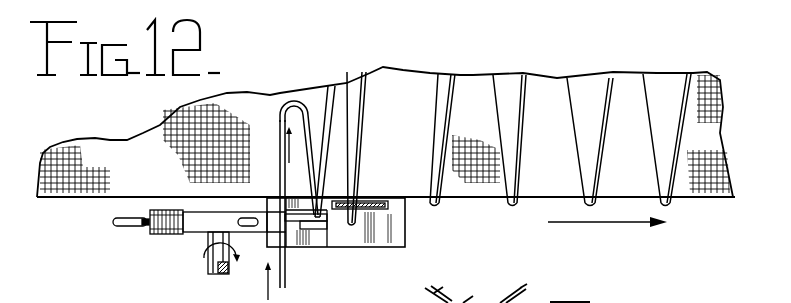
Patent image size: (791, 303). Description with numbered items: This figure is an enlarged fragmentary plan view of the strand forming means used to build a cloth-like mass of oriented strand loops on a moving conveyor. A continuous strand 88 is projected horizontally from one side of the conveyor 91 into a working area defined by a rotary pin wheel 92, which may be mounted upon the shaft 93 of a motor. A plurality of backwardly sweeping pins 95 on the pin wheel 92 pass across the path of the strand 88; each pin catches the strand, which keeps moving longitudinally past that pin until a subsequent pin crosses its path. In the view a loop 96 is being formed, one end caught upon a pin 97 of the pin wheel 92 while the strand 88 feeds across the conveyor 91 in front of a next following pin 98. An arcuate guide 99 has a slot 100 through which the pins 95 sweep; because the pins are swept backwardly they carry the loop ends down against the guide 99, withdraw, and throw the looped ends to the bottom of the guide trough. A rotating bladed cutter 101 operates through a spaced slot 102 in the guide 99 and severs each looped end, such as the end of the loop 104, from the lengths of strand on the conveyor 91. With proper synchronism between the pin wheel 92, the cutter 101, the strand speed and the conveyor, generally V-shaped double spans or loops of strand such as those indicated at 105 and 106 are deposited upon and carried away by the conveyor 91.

The continuous strand 88 is at (288, 268).
The conveyor 91 is at (73, 198).
The rotary pin wheel 92 is at (194, 236).
The shaft 93 is at (208, 264).
The backwardly sweeping pins 95 is at (125, 227).
The loop 96 is at (288, 98).
The pin 97 is at (327, 237).
The next following pin 98 is at (253, 230).
The arcuate guide 99 is at (378, 247).
The slot 100 is at (290, 232).
The rotating bladed cutter 101 is at (380, 218).
The spaced slot 102 is at (387, 207).
The end of the loop 104 is at (380, 238).
The V-shaped double span of strand 105 is at (332, 84).
The V-shaped double span of strand 106 is at (377, 66).